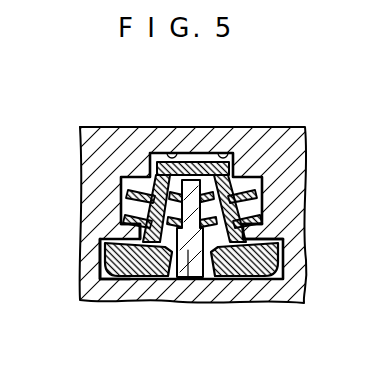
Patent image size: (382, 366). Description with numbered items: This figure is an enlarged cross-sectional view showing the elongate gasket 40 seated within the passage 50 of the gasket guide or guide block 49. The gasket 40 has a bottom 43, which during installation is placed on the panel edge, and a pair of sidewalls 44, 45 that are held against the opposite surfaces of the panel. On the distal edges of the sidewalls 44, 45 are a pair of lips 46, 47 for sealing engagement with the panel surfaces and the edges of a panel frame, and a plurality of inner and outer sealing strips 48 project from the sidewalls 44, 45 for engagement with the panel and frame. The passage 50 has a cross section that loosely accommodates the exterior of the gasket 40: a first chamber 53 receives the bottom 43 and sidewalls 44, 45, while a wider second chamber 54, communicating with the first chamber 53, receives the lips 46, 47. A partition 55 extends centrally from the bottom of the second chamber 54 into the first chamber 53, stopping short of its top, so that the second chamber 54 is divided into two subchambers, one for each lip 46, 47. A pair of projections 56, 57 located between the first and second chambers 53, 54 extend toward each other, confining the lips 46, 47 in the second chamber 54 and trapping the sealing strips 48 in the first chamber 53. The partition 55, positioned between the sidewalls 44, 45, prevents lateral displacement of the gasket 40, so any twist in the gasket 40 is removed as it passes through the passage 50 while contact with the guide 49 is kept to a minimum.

The gasket 40 is at (297, 156).
The bottom 43 is at (204, 162).
The sidewall 44 is at (150, 170).
The sidewall 45 is at (262, 188).
The lip 46 is at (128, 245).
The lip 47 is at (248, 255).
The sealing strips 48 is at (128, 195).
The gasket guide 49 is at (103, 138).
The passage 50 is at (187, 178).
The first chamber 53 is at (234, 158).
The second chamber 54 is at (102, 276).
The partition 55 is at (188, 278).
The projection 56 is at (115, 247).
The projection 57 is at (265, 250).